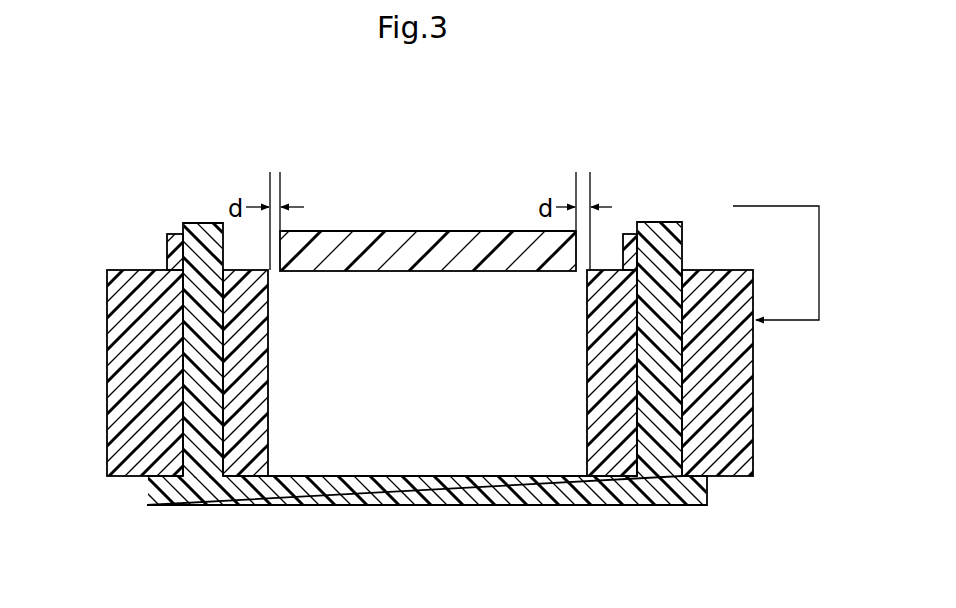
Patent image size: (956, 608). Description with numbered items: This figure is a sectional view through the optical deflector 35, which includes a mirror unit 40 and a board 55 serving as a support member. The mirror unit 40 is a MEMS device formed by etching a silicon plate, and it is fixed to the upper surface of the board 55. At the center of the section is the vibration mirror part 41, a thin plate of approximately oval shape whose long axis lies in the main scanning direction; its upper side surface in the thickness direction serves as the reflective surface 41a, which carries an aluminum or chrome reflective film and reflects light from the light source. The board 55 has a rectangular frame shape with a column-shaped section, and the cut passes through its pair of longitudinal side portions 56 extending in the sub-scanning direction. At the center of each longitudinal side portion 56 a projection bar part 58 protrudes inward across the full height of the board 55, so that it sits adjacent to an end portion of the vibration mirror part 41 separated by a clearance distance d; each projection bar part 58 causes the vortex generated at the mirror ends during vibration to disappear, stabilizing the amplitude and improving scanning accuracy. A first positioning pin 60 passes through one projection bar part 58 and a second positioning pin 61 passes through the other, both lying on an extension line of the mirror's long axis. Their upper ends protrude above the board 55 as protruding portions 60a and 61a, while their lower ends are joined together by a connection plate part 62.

The optical deflector 35 is at (120, 158).
The mirror unit 40 is at (339, 181).
The vibration mirror part 41 is at (412, 250).
The reflective surface 41a is at (468, 230).
The board 55 is at (756, 296).
The longitudinal side portions 56 is at (148, 282).
The projection bar parts 58 is at (268, 367).
The first positioning pin 60 is at (203, 233).
The protruding portion 60a is at (166, 257).
The second positioning pin 61 is at (660, 220).
The protruding portion 61a is at (683, 252).
The connection plate part 62 is at (354, 505).